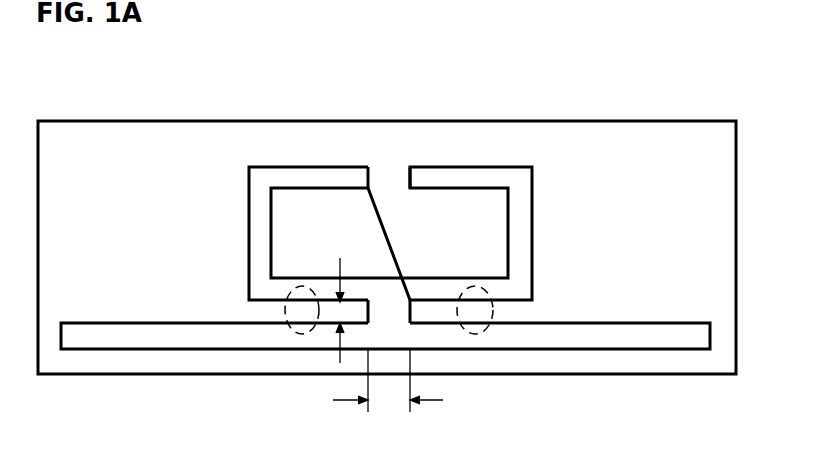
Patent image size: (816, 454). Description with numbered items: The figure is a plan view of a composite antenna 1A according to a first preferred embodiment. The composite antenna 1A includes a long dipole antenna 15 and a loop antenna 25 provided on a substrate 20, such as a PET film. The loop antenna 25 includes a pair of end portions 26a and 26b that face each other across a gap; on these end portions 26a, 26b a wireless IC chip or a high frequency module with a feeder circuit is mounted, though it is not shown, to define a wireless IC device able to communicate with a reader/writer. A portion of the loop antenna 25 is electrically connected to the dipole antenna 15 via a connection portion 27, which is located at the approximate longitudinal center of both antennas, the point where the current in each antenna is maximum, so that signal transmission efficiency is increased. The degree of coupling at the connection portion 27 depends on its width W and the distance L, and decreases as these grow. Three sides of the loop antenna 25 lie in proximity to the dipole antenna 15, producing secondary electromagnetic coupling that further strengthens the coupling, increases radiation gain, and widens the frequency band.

The composite antenna 1A is at (168, 70).
The substrate 20 is at (658, 121).
The dipole antenna 15 is at (658, 322).
The loop antenna 25 is at (532, 228).
The end portion 26a is at (352, 177).
The end portion 26b is at (420, 177).
The connection portion 27 is at (388, 310).